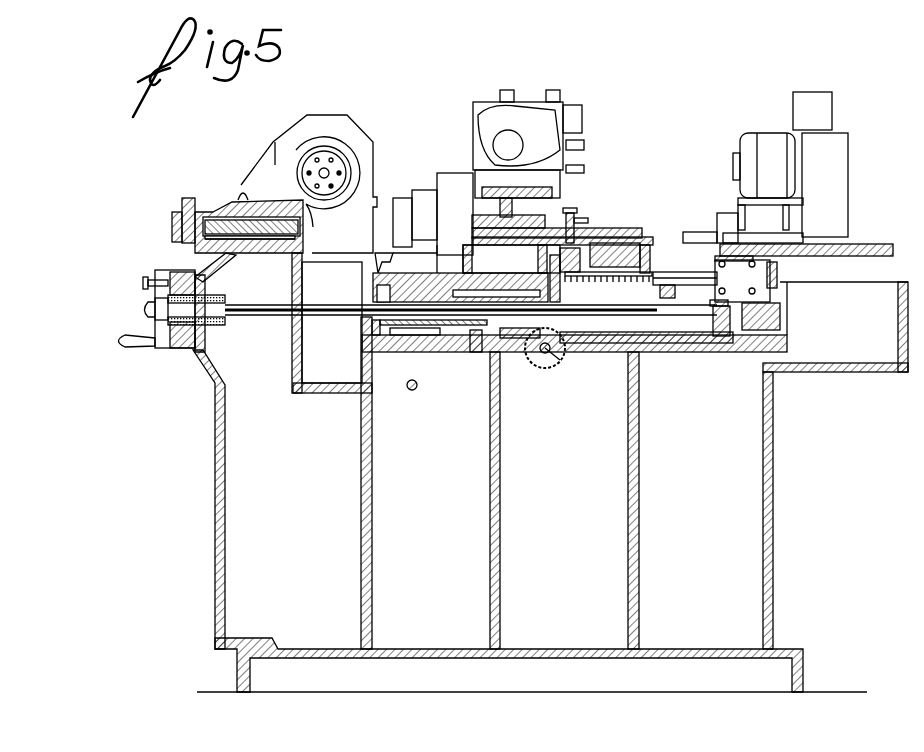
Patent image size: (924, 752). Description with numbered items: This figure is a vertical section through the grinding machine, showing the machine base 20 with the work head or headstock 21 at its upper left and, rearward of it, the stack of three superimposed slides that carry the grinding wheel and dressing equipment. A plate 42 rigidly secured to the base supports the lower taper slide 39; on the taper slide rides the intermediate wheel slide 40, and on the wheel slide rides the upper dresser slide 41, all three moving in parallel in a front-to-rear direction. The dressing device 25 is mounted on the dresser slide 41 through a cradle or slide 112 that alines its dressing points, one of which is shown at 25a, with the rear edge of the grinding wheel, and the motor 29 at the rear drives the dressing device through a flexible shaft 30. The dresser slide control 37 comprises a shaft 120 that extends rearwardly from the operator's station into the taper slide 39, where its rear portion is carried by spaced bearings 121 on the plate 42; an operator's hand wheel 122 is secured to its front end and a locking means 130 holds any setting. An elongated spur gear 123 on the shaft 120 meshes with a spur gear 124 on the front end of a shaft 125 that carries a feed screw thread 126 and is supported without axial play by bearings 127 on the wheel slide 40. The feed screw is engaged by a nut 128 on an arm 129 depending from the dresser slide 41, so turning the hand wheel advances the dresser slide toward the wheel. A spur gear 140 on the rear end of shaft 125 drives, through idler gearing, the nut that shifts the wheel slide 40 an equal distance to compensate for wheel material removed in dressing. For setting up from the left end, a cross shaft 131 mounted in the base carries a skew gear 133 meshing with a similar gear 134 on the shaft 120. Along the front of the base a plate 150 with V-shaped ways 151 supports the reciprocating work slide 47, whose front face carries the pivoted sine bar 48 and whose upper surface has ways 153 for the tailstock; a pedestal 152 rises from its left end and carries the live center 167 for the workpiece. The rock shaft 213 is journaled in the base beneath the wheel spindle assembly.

The machine base 20 is at (774, 418).
The work head or headstock 21 is at (375, 135).
The dressing device 25 is at (588, 112).
The dressing point 25a is at (462, 168).
The motor 29 is at (768, 142).
The flexible shaft 30 is at (715, 226).
The dresser slide control 37 is at (180, 358).
The taper slide 39 is at (428, 340).
The wheel slide 40 is at (385, 278).
The dresser slide 41 is at (648, 255).
The plate 42 is at (672, 348).
The work slide 47 is at (222, 200).
The sine bar 48 is at (172, 222).
The cradle or slide 112 is at (488, 220).
The shaft 120 is at (285, 312).
The bearings 121 is at (480, 348).
The operator's hand wheel 122 is at (168, 276).
The elongated spur gear 123 is at (618, 285).
The spur gear 124 is at (582, 232).
The shaft 125 is at (670, 268).
The feed screw thread 126 is at (680, 262).
The bearings 127 is at (528, 266).
The nut 128 is at (588, 266).
The arm 129 is at (598, 250).
The locking means 130 is at (143, 283).
The cross shaft 131 is at (556, 366).
The spiral or skew gear 133 is at (552, 360).
The spiral or skew gear 134 is at (538, 355).
The spur gear 140 is at (785, 258).
The plate 150 is at (305, 247).
The V-shaped ways 151 is at (208, 218).
The pedestal 152 is at (280, 162).
The ways 153 is at (243, 190).
The live center 167 is at (326, 172).
The rock shaft 213 is at (412, 390).